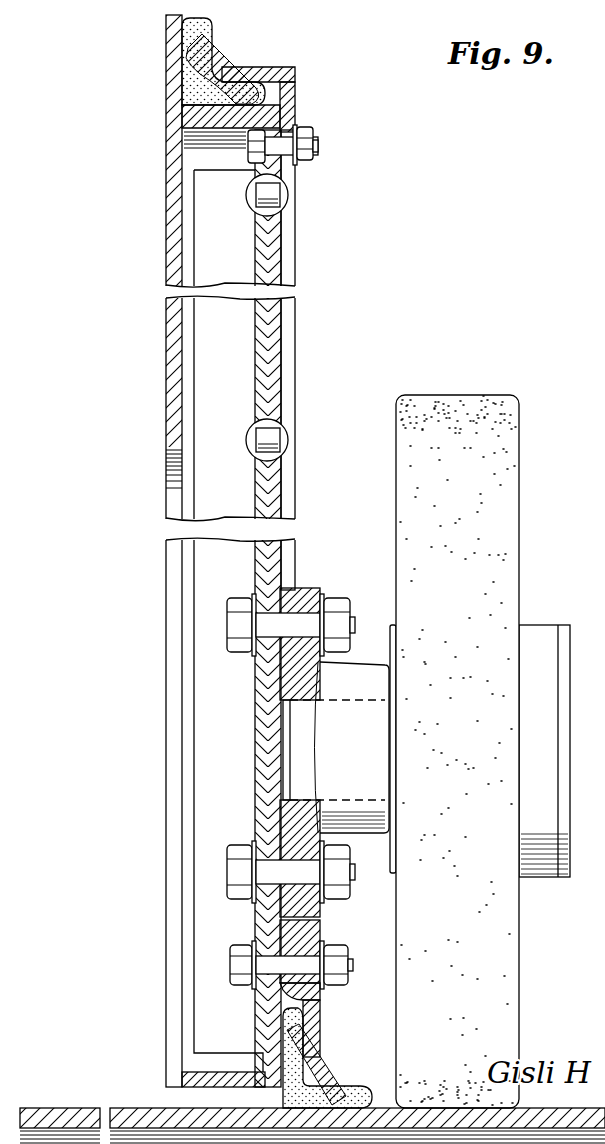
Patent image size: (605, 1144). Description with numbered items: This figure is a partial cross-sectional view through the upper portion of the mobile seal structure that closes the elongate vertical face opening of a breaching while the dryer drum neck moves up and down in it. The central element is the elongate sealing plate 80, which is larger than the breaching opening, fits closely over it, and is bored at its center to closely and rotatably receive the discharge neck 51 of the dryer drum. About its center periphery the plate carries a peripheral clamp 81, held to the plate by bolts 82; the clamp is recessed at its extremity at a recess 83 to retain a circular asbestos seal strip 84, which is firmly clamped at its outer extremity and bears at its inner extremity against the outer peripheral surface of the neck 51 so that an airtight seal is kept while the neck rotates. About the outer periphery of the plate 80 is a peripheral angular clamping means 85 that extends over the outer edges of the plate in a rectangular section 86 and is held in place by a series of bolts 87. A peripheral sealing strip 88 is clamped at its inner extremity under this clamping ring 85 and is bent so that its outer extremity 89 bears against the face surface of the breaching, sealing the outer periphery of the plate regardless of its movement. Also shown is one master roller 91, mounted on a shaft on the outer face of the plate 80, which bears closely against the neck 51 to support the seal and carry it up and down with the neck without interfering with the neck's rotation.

The discharge neck 51 is at (122, 1108).
The sealing plate 80 is at (277, 352).
The peripheral clamp 81 is at (310, 1032).
The bolt 82 is at (298, 958).
The recess 83 is at (296, 1010).
The circular asbestos seal strip 84 is at (307, 1103).
The peripheral angular clamping means 85 is at (296, 95).
The rectangular section 86 is at (246, 78).
The bolt 87 is at (285, 145).
The peripheral sealing strip 88 is at (210, 64).
The outer extremity of sealing strip 89 is at (198, 38).
The master roller 91 is at (512, 512).